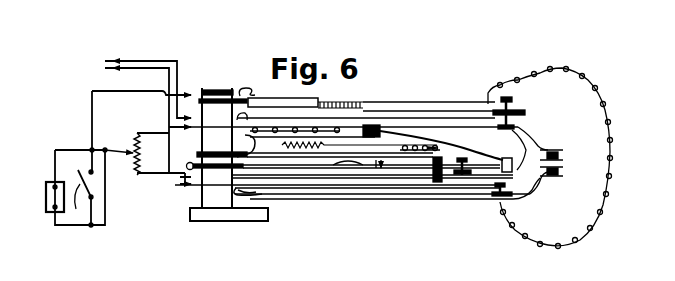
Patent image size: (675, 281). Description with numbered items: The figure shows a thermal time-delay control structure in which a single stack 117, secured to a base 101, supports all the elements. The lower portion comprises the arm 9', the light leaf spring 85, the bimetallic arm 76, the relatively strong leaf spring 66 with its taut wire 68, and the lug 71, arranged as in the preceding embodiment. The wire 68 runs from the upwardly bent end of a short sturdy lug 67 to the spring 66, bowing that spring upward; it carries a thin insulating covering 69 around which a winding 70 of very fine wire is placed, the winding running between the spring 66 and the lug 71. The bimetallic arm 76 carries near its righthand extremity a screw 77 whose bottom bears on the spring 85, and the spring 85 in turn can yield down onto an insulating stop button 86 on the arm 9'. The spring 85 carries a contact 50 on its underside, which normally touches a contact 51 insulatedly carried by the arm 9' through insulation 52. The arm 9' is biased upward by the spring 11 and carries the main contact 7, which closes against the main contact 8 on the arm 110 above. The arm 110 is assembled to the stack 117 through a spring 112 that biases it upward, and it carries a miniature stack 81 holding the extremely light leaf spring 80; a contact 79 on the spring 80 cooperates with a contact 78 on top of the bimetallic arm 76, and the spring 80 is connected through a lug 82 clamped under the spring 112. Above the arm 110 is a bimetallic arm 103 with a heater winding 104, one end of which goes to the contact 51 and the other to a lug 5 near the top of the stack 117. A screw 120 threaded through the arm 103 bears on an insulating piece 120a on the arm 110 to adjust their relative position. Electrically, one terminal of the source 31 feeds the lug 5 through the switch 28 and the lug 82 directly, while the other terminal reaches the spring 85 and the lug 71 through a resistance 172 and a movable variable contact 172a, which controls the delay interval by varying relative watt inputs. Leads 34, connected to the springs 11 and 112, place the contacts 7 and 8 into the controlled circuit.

The lug 5 is at (201, 89).
The main contact 7 is at (565, 172).
The main contact 8 is at (565, 156).
The arm 9' is at (382, 221).
The spring 11 is at (245, 196).
The switch 28 is at (90, 226).
The current source 31 is at (44, 199).
The leads 34 is at (137, 61).
The contact 50 is at (531, 194).
The contact 51 is at (532, 199).
The insulation 52 is at (519, 203).
The leaf spring 66 is at (327, 169).
The lug 67 is at (253, 149).
The wire 68 is at (290, 149).
The insulating covering 69 is at (303, 139).
The winding 70 is at (408, 143).
The lug 71 is at (194, 140).
The bimetallic arm 76 is at (383, 179).
The screw 77 is at (460, 159).
The contact 78 is at (530, 151).
The contact 79 is at (540, 141).
The leaf spring 80 is at (456, 143).
The miniature stack 81 is at (375, 126).
The lug 82 is at (170, 118).
The leaf spring 85 is at (417, 186).
The insulating stop button 86 is at (453, 200).
The base 101 is at (205, 219).
The bimetallic arm 103 is at (527, 111).
The heater winding 104 is at (345, 102).
The arm 110 is at (400, 126).
The spring 112 is at (246, 118).
The stack 117 is at (217, 89).
The screw 120 is at (517, 105).
The insulating piece 120a is at (514, 124).
The resistance 172 is at (135, 172).
The variable contact 172a is at (120, 140).